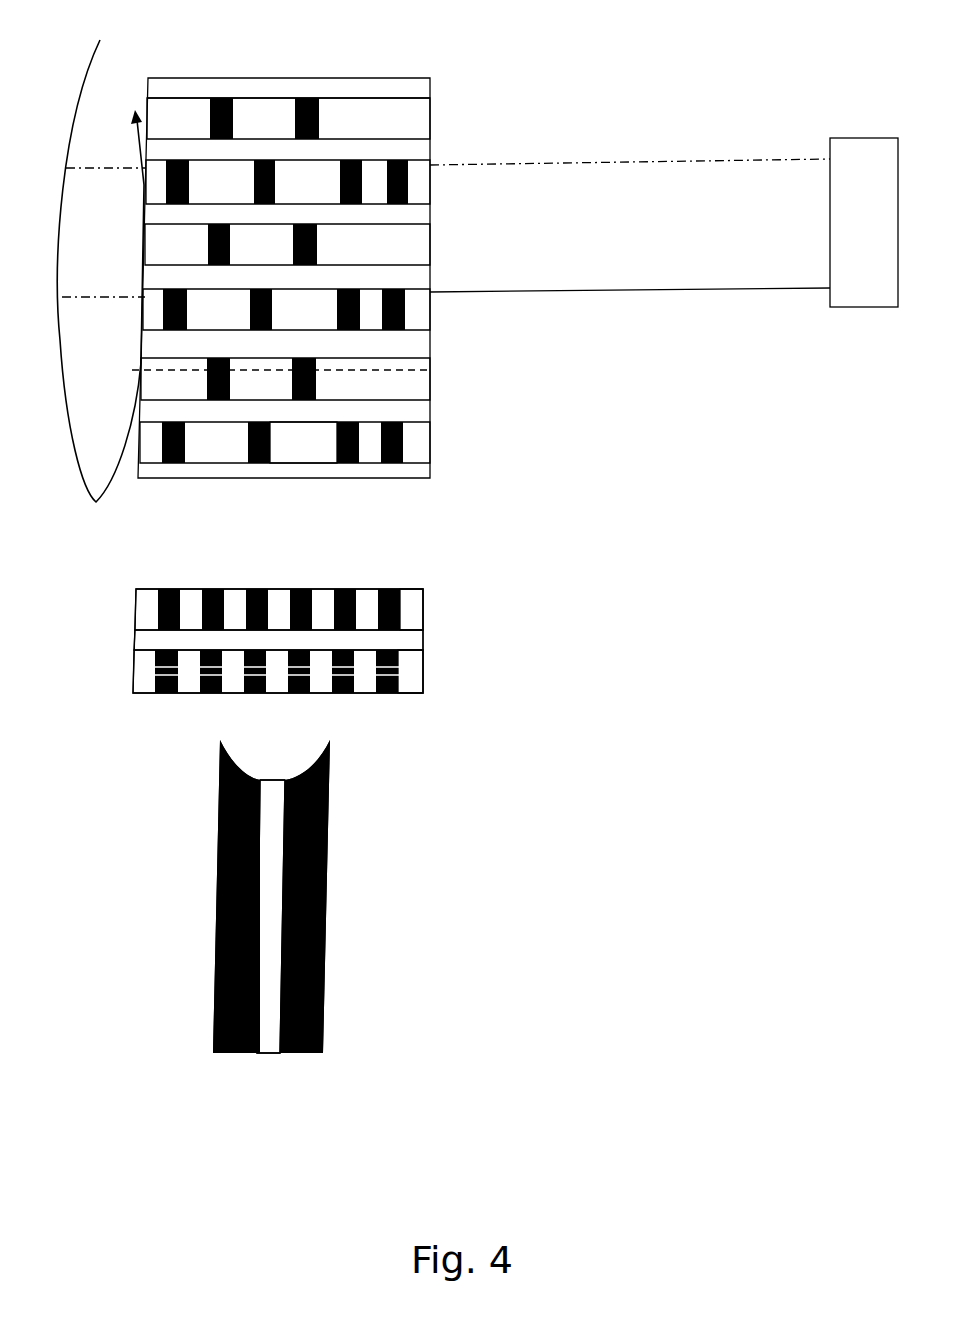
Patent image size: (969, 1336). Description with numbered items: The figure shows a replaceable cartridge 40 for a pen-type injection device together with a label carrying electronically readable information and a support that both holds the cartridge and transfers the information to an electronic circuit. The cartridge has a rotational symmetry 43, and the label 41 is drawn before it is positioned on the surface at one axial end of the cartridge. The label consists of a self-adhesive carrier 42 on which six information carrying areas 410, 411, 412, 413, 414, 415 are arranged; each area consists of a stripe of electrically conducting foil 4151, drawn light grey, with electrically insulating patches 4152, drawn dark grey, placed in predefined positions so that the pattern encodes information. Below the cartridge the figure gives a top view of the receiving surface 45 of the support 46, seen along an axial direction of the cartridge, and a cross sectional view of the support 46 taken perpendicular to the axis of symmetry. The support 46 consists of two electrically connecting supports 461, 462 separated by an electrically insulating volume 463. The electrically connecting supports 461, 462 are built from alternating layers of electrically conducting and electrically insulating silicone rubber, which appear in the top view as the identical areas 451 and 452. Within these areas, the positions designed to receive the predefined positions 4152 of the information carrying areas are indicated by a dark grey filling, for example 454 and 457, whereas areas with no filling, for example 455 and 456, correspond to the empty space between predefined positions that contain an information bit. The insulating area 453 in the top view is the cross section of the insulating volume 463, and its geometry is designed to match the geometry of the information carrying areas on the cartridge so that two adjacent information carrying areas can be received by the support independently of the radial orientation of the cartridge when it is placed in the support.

The replaceable cartridge 40 is at (728, 190).
The label 41 is at (367, 63).
The self-adhesive carrier 42 is at (255, 88).
The rotational symmetry 43 is at (80, 104).
The information carrying area 410 is at (432, 118).
The information carrying area 411 is at (432, 180).
The information carrying area 412 is at (432, 247).
The information carrying area 413 is at (432, 310).
The information carrying area 414 is at (432, 382).
The information carrying area 415 is at (345, 470).
The stripe of electrically conducting foil 4151 is at (313, 443).
The electrically insulating patch 4152 is at (353, 463).
The receiving surface 45 is at (293, 791).
The area of alternating layer 451 is at (276, 796).
The area of alternating layer 452 is at (276, 851).
The insulating area 453 is at (413, 637).
The receiving area for predefined position 454 is at (397, 587).
The unfilled area 455 is at (413, 602).
The unfilled area 456 is at (413, 673).
The receiving area for predefined position 457 is at (393, 692).
The support 46 is at (265, 896).
The electrically connecting support 461 is at (215, 943).
The electrically connecting support 462 is at (327, 943).
The electrically insulating volume 463 is at (268, 1022).